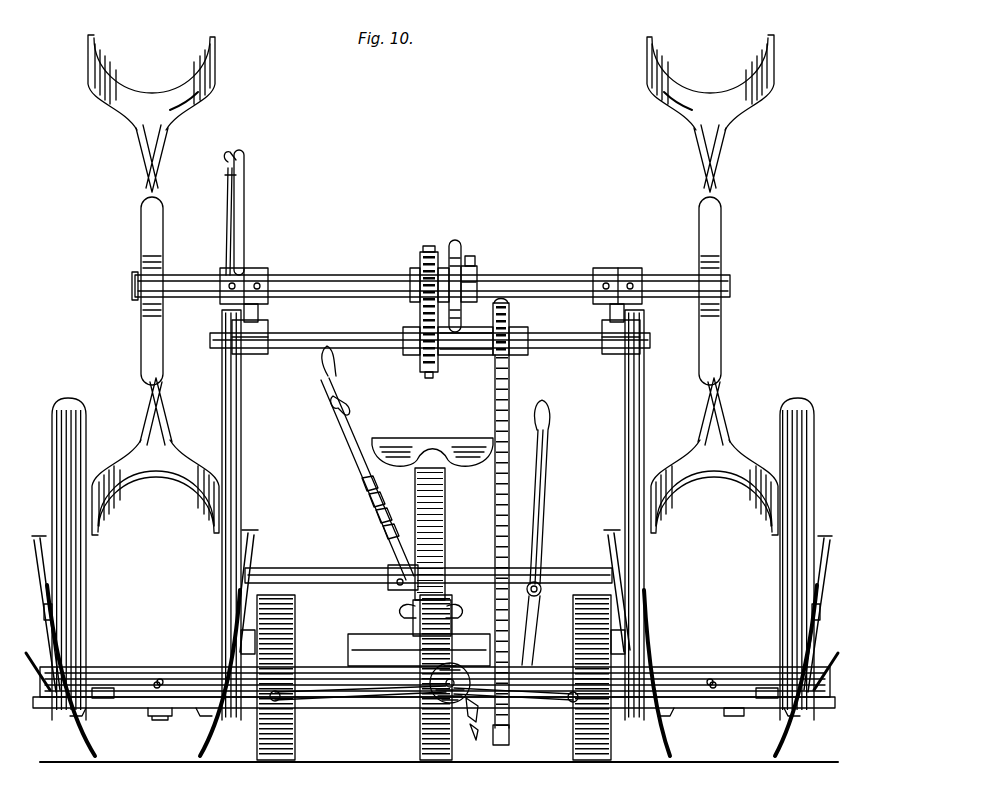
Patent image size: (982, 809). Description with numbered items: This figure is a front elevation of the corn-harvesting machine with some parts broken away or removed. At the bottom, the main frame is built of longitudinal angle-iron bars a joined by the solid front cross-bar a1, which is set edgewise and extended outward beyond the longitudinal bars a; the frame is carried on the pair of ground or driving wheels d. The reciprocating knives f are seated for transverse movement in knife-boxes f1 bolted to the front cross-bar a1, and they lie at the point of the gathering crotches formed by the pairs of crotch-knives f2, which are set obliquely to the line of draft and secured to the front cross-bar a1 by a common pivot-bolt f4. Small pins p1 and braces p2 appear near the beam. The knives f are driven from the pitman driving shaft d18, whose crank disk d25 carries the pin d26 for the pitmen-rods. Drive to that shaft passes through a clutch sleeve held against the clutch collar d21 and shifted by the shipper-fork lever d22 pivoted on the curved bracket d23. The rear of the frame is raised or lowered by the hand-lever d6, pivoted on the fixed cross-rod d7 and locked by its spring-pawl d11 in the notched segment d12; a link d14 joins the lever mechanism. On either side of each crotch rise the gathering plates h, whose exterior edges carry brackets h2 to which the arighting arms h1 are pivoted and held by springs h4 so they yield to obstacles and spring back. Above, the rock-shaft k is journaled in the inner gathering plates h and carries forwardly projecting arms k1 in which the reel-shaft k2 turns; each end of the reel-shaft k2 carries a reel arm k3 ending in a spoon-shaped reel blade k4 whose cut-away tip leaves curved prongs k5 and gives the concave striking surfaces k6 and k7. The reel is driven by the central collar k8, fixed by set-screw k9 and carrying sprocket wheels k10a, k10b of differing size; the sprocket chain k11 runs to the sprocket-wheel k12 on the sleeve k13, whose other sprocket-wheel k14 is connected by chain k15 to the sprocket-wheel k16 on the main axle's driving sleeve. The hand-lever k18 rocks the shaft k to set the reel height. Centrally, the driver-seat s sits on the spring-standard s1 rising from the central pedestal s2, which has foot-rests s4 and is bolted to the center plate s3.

The longitudinal angle-iron bars a is at (250, 708).
The front cross-bar a1 is at (150, 676).
The ground or driving wheels d is at (296, 732).
The hand-lever d6 is at (350, 424).
The cross-rod d7 is at (320, 568).
The spring-pawl d11 is at (368, 500).
The notched segment d12 is at (396, 546).
The connecting link d14 is at (372, 704).
The pitman driving shaft d18 is at (462, 658).
The clutch collar d21 is at (550, 702).
The shipper-fork lever d22 is at (548, 440).
The curved bracket d23 is at (532, 636).
The crank disk d25 is at (470, 720).
The pin d26 is at (471, 744).
The reciprocating knives f is at (744, 714).
The knife-boxes f1 is at (102, 688).
The crotch-knives f2 is at (435, 723).
The pivot-bolt f4 is at (158, 720).
The gathering plates h is at (84, 574).
The arighting arms h1 is at (82, 744).
The brackets h2 is at (44, 612).
The springs h4 is at (38, 536).
The rock-shaft k is at (306, 348).
The forwardly projecting arms k1 is at (256, 354).
The reel-shaft k2 is at (318, 275).
The reel arms k3 is at (158, 227).
The reel blades k4 is at (160, 162).
The curved prongs k5 is at (96, 55).
The concave striking surface k6 is at (176, 108).
The concave striking surface k7 is at (152, 92).
The central collar k8 is at (452, 242).
The set-screw k9 is at (476, 272).
The sprocket wheel k10a is at (424, 247).
The sprocket wheel k10b is at (470, 256).
The sprocket chain k11 is at (420, 310).
The sprocket-wheel k12 is at (434, 376).
The sleeve k13 is at (492, 334).
The sprocket-wheel k14 is at (510, 304).
The chain k15 is at (494, 540).
The sprocket-wheel k16 is at (506, 728).
The hand-lever k18 is at (244, 212).
The pin p1 is at (164, 680).
The brace p2 is at (435, 659).
The driver-seat s is at (412, 438).
The spring-standard s1 is at (415, 486).
The central pedestal s2 is at (404, 603).
The center plate s3 is at (366, 638).
The foot-rests s4 is at (460, 603).